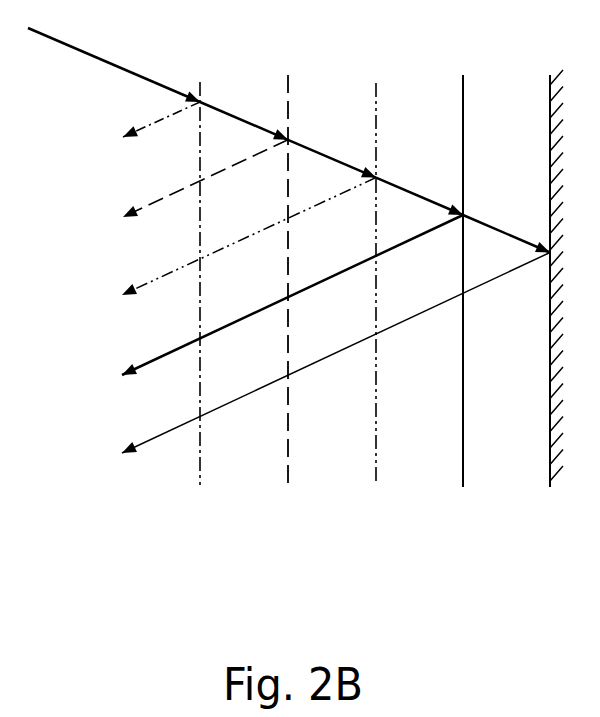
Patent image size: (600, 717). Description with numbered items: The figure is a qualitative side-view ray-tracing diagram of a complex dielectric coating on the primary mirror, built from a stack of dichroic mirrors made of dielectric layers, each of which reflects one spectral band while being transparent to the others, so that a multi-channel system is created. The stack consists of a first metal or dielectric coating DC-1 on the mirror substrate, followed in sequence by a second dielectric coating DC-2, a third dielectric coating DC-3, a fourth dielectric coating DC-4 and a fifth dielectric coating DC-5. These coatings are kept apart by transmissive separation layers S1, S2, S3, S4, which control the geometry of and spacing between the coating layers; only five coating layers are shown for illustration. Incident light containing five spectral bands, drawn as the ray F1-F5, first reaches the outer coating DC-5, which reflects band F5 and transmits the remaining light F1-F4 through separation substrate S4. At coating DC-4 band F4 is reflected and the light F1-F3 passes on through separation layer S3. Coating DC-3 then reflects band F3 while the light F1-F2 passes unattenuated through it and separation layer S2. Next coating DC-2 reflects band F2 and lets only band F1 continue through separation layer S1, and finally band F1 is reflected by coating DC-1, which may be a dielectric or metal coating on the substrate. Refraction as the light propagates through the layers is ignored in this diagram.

The first metal or dielectric coating DC-1 is at (550, 477).
The second dielectric coating DC-2 is at (463, 477).
The third dielectric coating DC-3 is at (376, 477).
The fourth dielectric coating DC-4 is at (288, 477).
The fifth dielectric coating DC-5 is at (200, 477).
The transmissive separation layer S1 is at (525, 408).
The transmissive separation layer S2 is at (435, 408).
The transmissive separation layer S3 is at (348, 407).
The transmissive separation layer S4 is at (258, 370).
The incident light of spectral bands F1 through F5 F1-F5 is at (165, 88).
The transmitted light of spectral bands F1 through F4 F1-F4 is at (252, 125).
The transmitted light of spectral bands F1 through F3 F1-F3 is at (338, 160).
The transmitted light of spectral bands F1 and F2 F1-F2 is at (427, 198).
The spectral band F1 is at (508, 233).
The spectral band F2 is at (274, 301).
The spectral band F3 is at (230, 244).
The spectral band F4 is at (186, 185).
The spectral band F5 is at (142, 127).